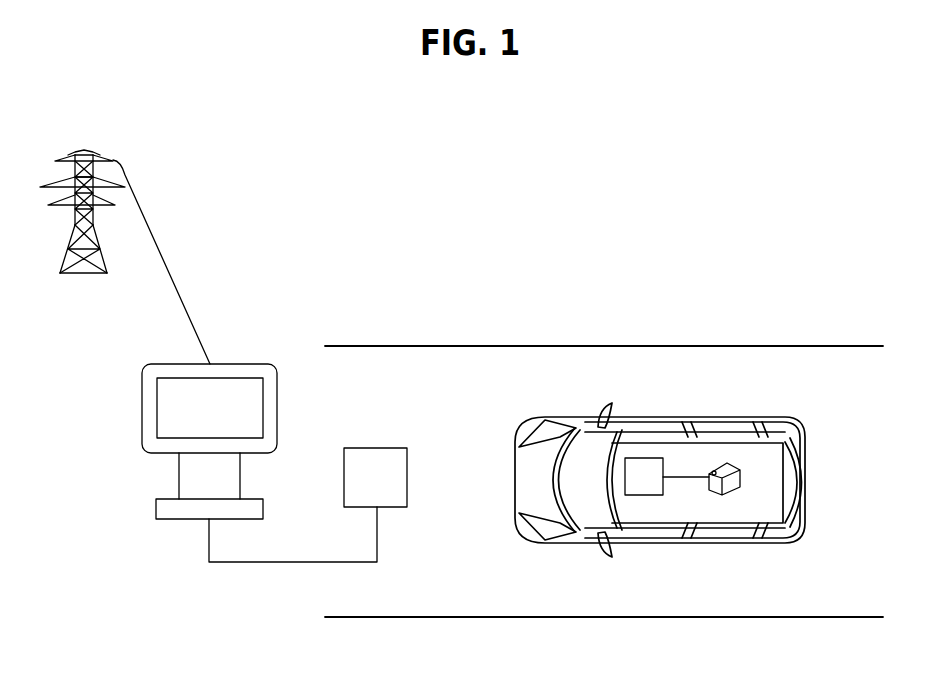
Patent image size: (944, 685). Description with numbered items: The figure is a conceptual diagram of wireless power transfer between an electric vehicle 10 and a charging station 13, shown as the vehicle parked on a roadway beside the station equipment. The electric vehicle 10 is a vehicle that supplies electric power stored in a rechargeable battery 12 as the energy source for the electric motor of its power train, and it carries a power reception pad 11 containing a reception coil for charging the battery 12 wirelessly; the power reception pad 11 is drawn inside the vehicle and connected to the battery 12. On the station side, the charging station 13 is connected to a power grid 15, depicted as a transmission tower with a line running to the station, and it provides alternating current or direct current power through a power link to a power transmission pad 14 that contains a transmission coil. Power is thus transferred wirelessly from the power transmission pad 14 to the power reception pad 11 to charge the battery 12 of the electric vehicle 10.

The electric vehicle 10 is at (679, 418).
The power reception pad 11 is at (642, 457).
The battery 12 is at (727, 462).
The charging station 13 is at (238, 363).
The power transmission pad 14 is at (374, 447).
The power grid 15 is at (82, 156).